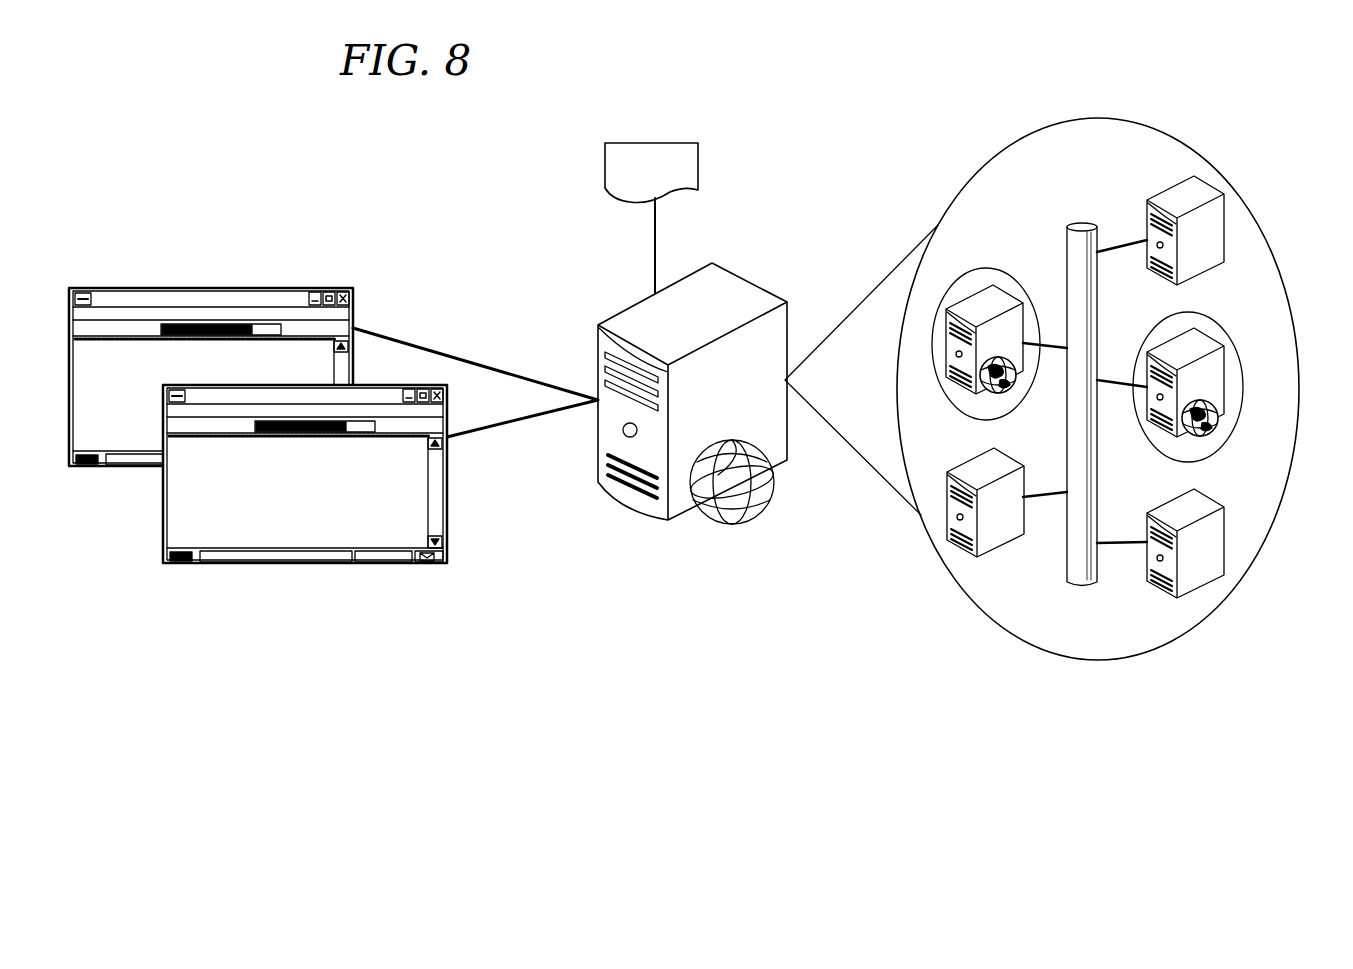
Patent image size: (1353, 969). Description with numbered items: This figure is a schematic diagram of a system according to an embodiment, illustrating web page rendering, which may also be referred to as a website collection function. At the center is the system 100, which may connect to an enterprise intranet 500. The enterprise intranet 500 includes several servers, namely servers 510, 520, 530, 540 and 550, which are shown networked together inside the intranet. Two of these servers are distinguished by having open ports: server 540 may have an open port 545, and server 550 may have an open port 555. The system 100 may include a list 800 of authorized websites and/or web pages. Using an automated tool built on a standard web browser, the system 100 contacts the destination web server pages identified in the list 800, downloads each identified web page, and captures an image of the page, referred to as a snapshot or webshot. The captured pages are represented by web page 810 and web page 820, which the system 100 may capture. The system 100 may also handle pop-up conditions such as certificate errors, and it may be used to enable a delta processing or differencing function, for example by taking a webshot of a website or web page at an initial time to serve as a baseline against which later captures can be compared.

The system 100 is at (628, 502).
The enterprise intranet 500 is at (1094, 118).
The server 510 is at (1223, 222).
The server 520 is at (955, 550).
The server 530 is at (1210, 582).
The server 540 is at (1227, 355).
The open port 545 is at (1217, 427).
The server 550 is at (982, 288).
The open port 555 is at (977, 387).
The list 800 is at (646, 142).
The web page 810 is at (217, 293).
The web page 820 is at (303, 532).